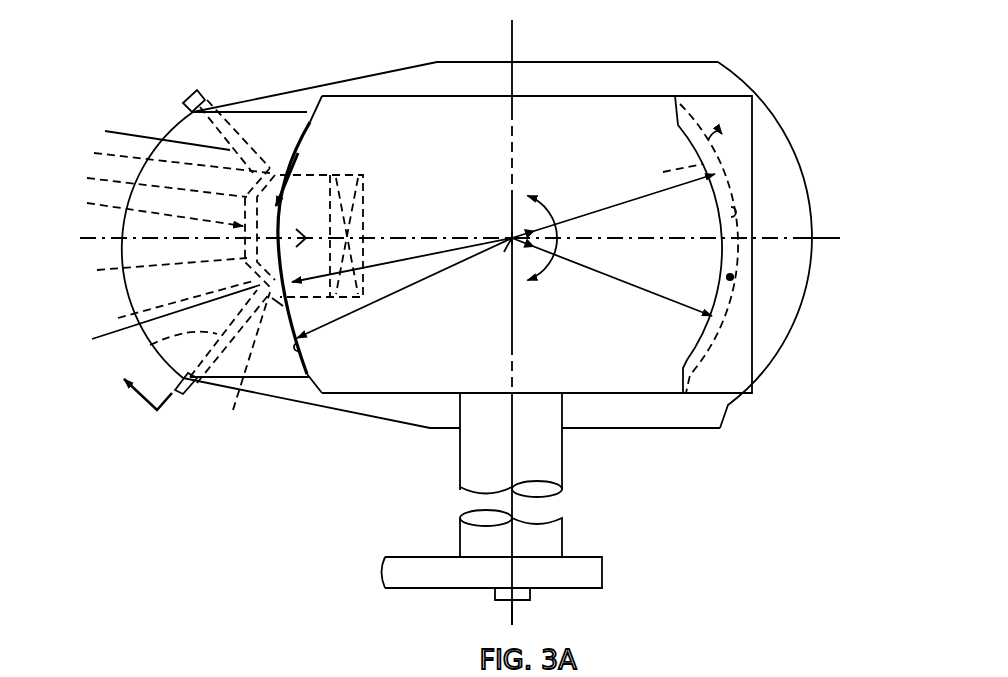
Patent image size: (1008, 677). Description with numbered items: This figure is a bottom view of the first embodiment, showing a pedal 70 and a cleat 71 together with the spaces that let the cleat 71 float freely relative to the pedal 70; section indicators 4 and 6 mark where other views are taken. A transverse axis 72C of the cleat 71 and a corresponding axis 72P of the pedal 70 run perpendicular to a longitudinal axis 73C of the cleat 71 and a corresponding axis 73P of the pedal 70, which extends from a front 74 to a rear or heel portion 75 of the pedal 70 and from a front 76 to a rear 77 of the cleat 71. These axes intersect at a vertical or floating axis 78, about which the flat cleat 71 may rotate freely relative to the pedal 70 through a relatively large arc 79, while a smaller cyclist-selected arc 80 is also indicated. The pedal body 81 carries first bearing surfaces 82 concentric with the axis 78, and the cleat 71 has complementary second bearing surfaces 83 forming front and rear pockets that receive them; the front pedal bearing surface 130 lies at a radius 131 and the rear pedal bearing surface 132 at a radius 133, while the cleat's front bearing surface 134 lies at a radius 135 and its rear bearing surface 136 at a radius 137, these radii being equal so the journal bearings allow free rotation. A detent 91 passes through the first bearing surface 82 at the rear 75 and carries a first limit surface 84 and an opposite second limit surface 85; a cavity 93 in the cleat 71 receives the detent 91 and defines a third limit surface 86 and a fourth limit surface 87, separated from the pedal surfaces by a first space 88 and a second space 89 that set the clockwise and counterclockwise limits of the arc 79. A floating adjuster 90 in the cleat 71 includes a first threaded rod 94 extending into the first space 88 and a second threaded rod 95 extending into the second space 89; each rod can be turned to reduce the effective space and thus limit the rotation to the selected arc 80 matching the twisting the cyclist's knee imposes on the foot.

The pedal 70 is at (418, 92).
The cleat 71 is at (166, 130).
The transverse or pedal axis of the cleat 72C is at (513, 43).
The transverse axis of the pedal 72P is at (513, 621).
The longitudinal axis of the cleat 73C is at (440, 247).
The longitudinal axis of the pedal 73P is at (814, 235).
The front of the pedal 74 is at (680, 95).
The rear or heel portion of the pedal 75 is at (322, 394).
The front of the cleat 76 is at (775, 118).
The rear of the cleat 77 is at (127, 291).
The vertical or floating axis 78 is at (504, 252).
The free floating rotation arc 79 is at (543, 202).
The selected rotation arc 80 is at (510, 236).
The pedal body 81 is at (602, 108).
The first bearing surfaces 82 is at (313, 140).
The second bearing surfaces 83 is at (280, 170).
The first limit surface 84 is at (171, 306).
The second limit surface 85 is at (154, 182).
The third limit surface 86 is at (245, 361).
The fourth limit surface 87 is at (290, 153).
The first space 88 is at (162, 317).
The second space 89 is at (169, 157).
The floating adjuster 90 is at (182, 92).
The detent 91 is at (160, 269).
The cavity 93 is at (152, 209).
The first threaded rod 94 is at (168, 349).
The second threaded rod 95 is at (155, 134).
The front bearing surface of the pedal 130 is at (730, 213).
The radius of front pedal bearing surface 131 is at (615, 203).
The rear bearing surface of the pedal 132 is at (300, 347).
The radius of rear pedal bearing surface 133 is at (423, 283).
The front bearing surface of the cleat 134 is at (732, 278).
The radius of front cleat bearing surface 135 is at (593, 270).
The rear bearing surface of the cleat 136 is at (272, 298).
The radius of rear cleat bearing surface 137 is at (410, 253).
The section line 4- 4 is at (304, 232).
The section line 6- 6 is at (202, 281).